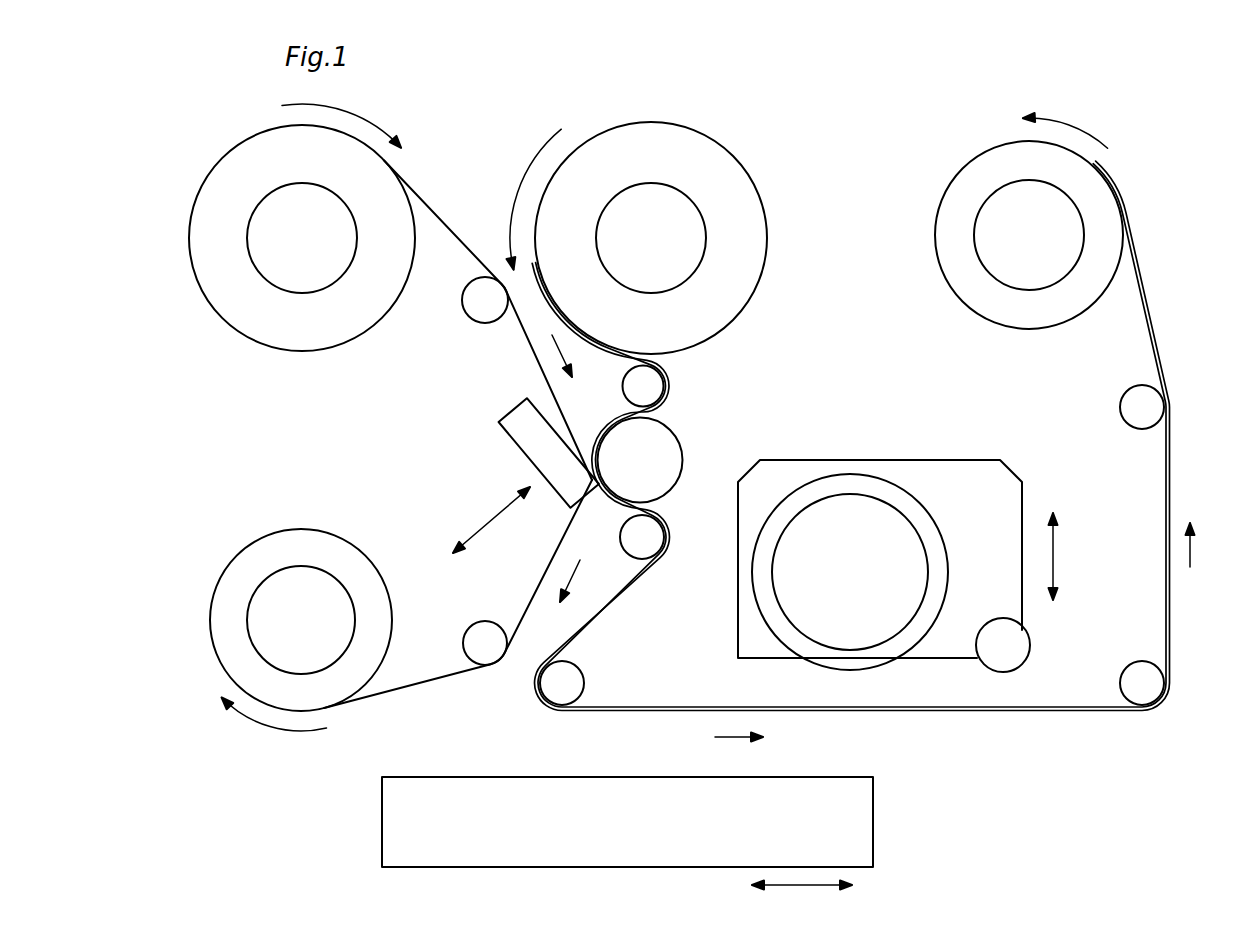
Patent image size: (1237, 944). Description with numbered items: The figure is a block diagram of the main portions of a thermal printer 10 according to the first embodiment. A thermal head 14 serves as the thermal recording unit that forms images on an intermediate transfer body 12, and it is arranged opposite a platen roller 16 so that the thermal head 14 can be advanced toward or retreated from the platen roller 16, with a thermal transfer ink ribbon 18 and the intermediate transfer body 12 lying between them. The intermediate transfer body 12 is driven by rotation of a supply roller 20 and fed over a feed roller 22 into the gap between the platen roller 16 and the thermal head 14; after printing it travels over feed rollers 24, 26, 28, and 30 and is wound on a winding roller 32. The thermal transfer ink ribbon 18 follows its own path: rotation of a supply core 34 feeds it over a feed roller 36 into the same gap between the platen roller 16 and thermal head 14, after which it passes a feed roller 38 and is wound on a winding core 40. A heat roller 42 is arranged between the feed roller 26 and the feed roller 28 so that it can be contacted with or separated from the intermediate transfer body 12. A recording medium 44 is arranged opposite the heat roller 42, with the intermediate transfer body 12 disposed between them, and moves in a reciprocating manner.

The thermal printer 10 is at (1167, 189).
The intermediate transfer body 12 is at (618, 603).
The thermal head 14 is at (530, 440).
The platen roller 16 is at (650, 455).
The thermal transfer ink ribbon 18 is at (540, 365).
The supply roller 20 is at (677, 218).
The feed roller 22 is at (647, 390).
The feed roller 24 is at (650, 533).
The feed roller 26 is at (567, 678).
The feed roller 28 is at (1140, 675).
The feed roller 30 is at (1133, 407).
The winding roller 32 is at (993, 208).
The supply core 34 is at (262, 213).
The feed roller 36 is at (486, 306).
The feed roller 38 is at (483, 647).
The winding core 40 is at (265, 595).
The heat roller 42 is at (899, 503).
The recording medium 44 is at (847, 817).